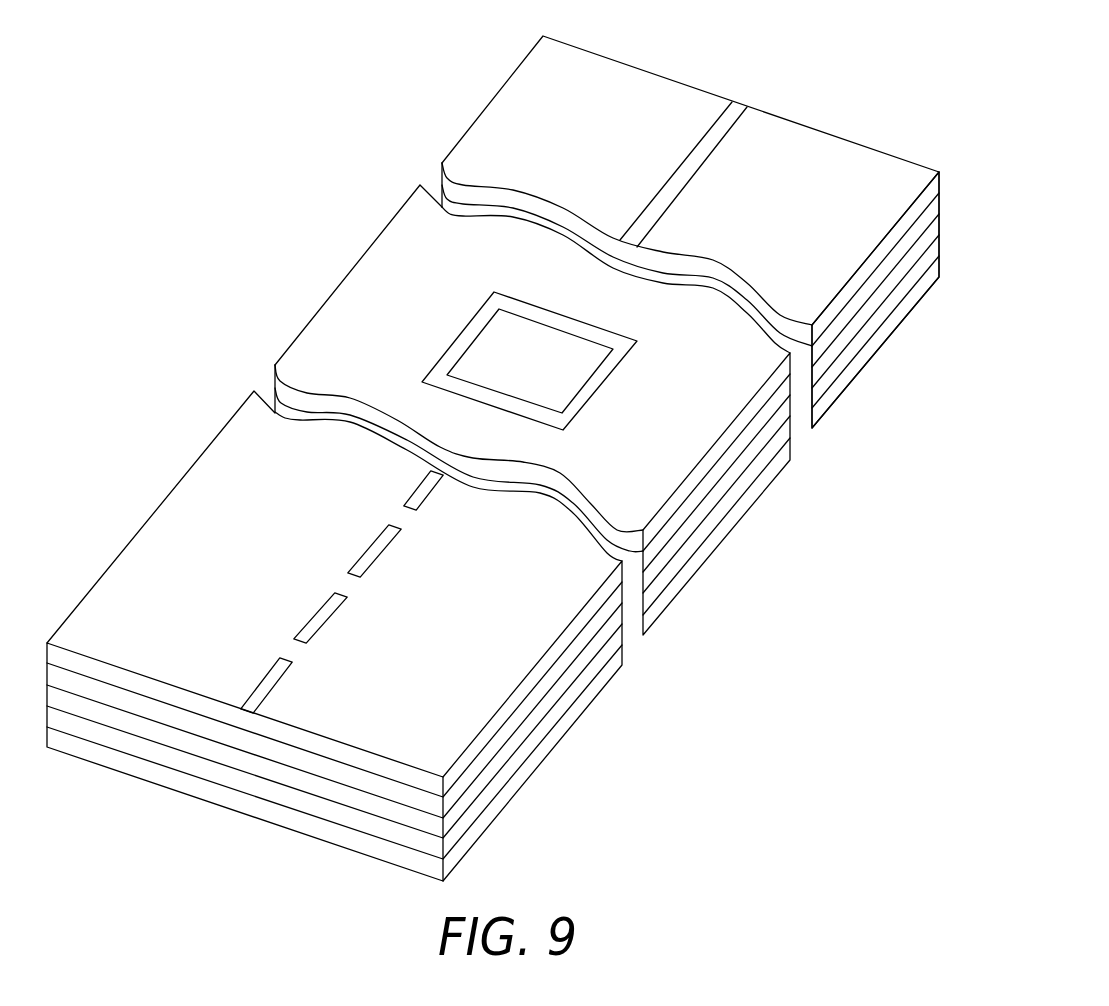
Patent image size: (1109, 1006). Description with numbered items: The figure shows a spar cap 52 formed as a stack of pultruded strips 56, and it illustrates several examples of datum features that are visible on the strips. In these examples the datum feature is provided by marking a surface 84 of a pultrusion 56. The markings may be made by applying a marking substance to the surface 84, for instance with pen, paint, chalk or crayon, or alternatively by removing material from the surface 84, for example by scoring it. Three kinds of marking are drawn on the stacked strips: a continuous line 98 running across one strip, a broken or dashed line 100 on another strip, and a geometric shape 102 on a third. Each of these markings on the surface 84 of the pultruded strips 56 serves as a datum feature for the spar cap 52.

The spar cap 52 is at (259, 197).
The pultruded strip 56 is at (892, 302).
The surface 84 is at (197, 477).
The continuous line 98 is at (715, 140).
The broken (dashed) line 100 is at (377, 548).
The geometric shape 102 is at (595, 379).